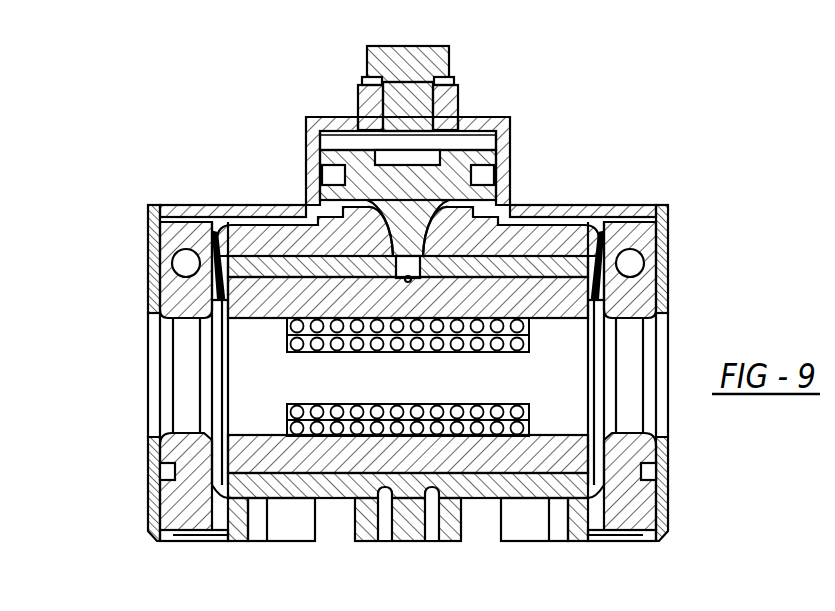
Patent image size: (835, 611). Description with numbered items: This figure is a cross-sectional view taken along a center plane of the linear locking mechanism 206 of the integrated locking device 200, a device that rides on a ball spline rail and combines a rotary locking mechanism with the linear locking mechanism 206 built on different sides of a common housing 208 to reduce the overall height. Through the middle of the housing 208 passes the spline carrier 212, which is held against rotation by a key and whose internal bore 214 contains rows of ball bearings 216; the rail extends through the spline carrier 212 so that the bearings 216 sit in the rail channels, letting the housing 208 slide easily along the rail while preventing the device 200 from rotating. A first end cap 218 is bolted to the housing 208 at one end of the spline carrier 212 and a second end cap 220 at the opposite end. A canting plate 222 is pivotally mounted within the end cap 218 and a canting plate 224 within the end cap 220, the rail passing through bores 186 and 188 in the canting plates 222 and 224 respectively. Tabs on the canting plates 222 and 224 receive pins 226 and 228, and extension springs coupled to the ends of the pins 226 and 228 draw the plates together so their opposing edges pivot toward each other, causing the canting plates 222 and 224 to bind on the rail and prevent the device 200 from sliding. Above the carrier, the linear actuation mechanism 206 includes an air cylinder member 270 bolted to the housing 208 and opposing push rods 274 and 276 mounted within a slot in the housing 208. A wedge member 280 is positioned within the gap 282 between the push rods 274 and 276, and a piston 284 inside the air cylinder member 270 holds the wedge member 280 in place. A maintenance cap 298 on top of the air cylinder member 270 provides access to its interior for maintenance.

The integrated locking device 200 is at (664, 93).
The linear locking mechanism 206 is at (528, 170).
The housing 208 is at (250, 262).
The spline carrier 212 is at (283, 457).
The internal bore 214 is at (553, 397).
The ball bearings 216 is at (397, 410).
The first end cap 218 is at (147, 287).
The second end cap 220 is at (655, 512).
The canting plate 222 is at (167, 345).
The canting plate 224 is at (664, 403).
The pin 226 is at (178, 262).
The pin 228 is at (640, 259).
The air cylinder member 270 is at (320, 117).
The push rod 274 is at (283, 240).
The push rod 276 is at (550, 238).
The wedge member 280 is at (407, 226).
The gap 282 is at (413, 278).
The piston 284 is at (400, 177).
The maintenance cap 298 is at (410, 53).
The bore 186 is at (185, 383).
The bore 188 is at (628, 360).